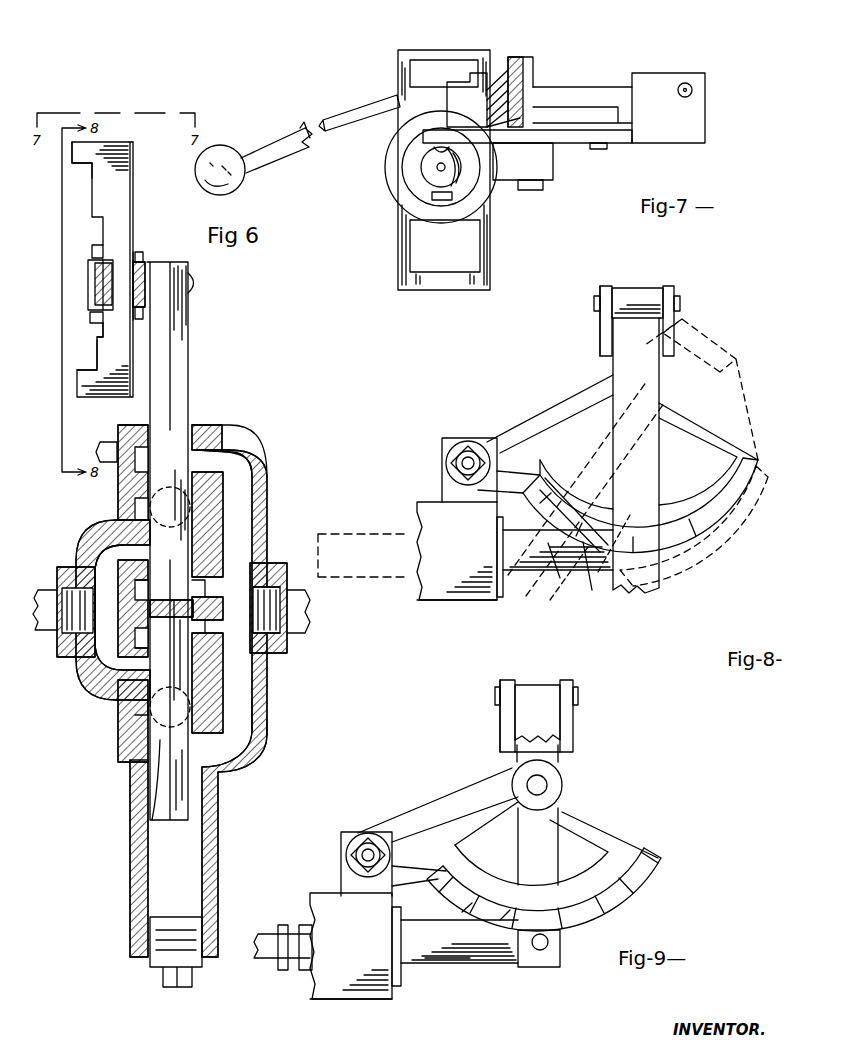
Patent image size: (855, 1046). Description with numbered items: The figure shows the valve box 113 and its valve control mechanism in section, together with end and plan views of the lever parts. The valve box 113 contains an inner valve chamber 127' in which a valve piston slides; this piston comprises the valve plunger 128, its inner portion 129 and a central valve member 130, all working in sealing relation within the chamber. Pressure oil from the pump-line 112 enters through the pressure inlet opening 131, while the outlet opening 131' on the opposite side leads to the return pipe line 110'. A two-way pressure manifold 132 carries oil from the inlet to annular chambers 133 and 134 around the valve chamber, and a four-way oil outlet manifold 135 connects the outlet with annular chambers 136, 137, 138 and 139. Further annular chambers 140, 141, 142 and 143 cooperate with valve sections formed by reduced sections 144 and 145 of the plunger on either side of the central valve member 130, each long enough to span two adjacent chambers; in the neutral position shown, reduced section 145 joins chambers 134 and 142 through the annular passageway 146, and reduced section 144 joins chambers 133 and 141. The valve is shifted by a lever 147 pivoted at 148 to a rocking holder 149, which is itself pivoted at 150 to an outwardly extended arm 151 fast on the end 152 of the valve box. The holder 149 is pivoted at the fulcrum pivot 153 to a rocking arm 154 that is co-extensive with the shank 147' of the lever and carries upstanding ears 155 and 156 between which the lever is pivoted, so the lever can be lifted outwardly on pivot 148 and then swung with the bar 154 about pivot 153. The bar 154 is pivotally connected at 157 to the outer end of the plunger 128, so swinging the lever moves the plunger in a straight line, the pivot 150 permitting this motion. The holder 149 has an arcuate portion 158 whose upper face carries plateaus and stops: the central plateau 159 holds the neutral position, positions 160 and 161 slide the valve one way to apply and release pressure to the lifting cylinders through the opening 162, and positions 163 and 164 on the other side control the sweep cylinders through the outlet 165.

In FIG. 6, the return pipe line 110' is at (311, 615).
In FIG. 6, the pump-line 112 is at (48, 640).
In FIG. 6, the valve box 113 is at (240, 675).
In FIG. 7, the valve box 113 is at (487, 190).
In FIG. 8, the valve box 113 is at (442, 600).
In FIG. 9, the valve box 113 is at (337, 984).
In FIG. 6, the inner valve chamber 127' is at (251, 524).
In FIG. 6, the valve plunger 128 is at (182, 373).
In FIG. 7, the valve plunger 128 is at (441, 167).
In FIG. 8, the valve plunger 128 is at (600, 570).
In FIG. 9, the valve plunger 128 is at (292, 958).
In FIG. 6, the inner portion of valve plunger 129 is at (160, 785).
In FIG. 6, the central valve member 130 is at (100, 655).
In FIG. 6, the pressure inlet opening 131 is at (60, 603).
In FIG. 7, the pressure inlet opening 131 is at (421, 175).
In FIG. 6, the outlet opening 131' is at (305, 608).
In FIG. 6, the two-way pressure manifold 132 is at (95, 650).
In FIG. 6, the annular chamber 133 is at (220, 515).
In FIG. 6, the annular chamber 134 is at (225, 660).
In FIG. 6, the four-way oil outlet manifold 135 is at (245, 725).
In FIG. 6, the annular chamber 136 is at (112, 530).
In FIG. 6, the annular chamber 137 is at (100, 450).
In FIG. 6, the annular chamber 138 is at (115, 670).
In FIG. 6, the annular chamber 139 is at (125, 760).
In FIG. 6, the annular chamber 140 is at (213, 482).
In FIG. 6, the annular chamber 141 is at (85, 555).
In FIG. 6, the annular chamber 142 is at (118, 640).
In FIG. 6, the annular chamber 143 is at (240, 705).
In FIG. 6, the reduced section of valve plunger 144 is at (187, 587).
In FIG. 6, the reduced section of valve plunger 145 is at (270, 620).
In FIG. 6, the annular passageway 146 is at (262, 635).
In FIG. 6, the lever 147 is at (170, 216).
In FIG. 7, the lever 147 is at (359, 88).
In FIG. 8, the shank of lever 147' is at (606, 455).
In FIG. 9, the shank of lever 147' is at (579, 723).
In FIG. 7, the pivot 148 is at (692, 92).
In FIG. 8, the pivot 148 is at (680, 302).
In FIG. 9, the pivot 148 is at (578, 700).
In FIG. 8, the rocking holder 149 is at (540, 418).
In FIG. 9, the rocking holder 149 is at (447, 805).
In FIG. 6, the pivot 150 is at (118, 428).
In FIG. 7, the pivot 150 is at (530, 190).
In FIG. 8, the pivot 150 is at (468, 450).
In FIG. 9, the pivot 150 is at (368, 843).
In FIG. 8, the outwardly extended arm 151 is at (445, 453).
In FIG. 9, the outwardly extended arm 151 is at (343, 845).
In FIG. 6, the end of valve box 152 is at (222, 425).
In FIG. 8, the end of valve box 152 is at (430, 512).
In FIG. 9, the end of valve box 152 is at (327, 905).
In FIG. 7, the fulcrum pivot 153 is at (600, 150).
In FIG. 9, the fulcrum pivot 153 is at (545, 785).
In FIG. 6, the rocking arm 154 is at (142, 300).
In FIG. 7, the rocking arm 154 is at (570, 135).
In FIG. 9, the rocking arm 154 is at (548, 835).
In FIG. 6, the upstanding ear 155 is at (92, 250).
In FIG. 7, the upstanding ear 155 is at (690, 118).
In FIG. 8, the upstanding ear 155 is at (674, 322).
In FIG. 9, the upstanding ear 155 is at (575, 695).
In FIG. 6, the upstanding ear 156 is at (90, 316).
In FIG. 8, the upstanding ear 156 is at (606, 343).
In FIG. 9, the upstanding ear 156 is at (505, 718).
In FIG. 6, the pivot connection 157 is at (200, 283).
In FIG. 7, the pivot connection 157 is at (430, 168).
In FIG. 9, the pivot connection 157 is at (540, 950).
In FIG. 6, the arcuate portion 158 is at (123, 338).
In FIG. 7, the arcuate portion 158 is at (525, 132).
In FIG. 9, the arcuate portion 158 is at (618, 890).
In FIG. 6, the central plateau 159 is at (136, 285).
In FIG. 6, the plateau and stop 160 is at (103, 225).
In FIG. 7, the plateau and stop 160 is at (455, 90).
In FIG. 8, the plateau and stop 160 is at (688, 525).
In FIG. 9, the plateau and stop 160 is at (580, 915).
In FIG. 6, the plateau and stop 161 is at (92, 178).
In FIG. 7, the plateau and stop 161 is at (510, 70).
In FIG. 8, the plateau and stop 161 is at (745, 500).
In FIG. 9, the plateau and stop 161 is at (590, 905).
In FIG. 6, the inlet and outlet opening 162 is at (172, 490).
In FIG. 6, the position 163 is at (97, 338).
In FIG. 8, the position 163 is at (593, 572).
In FIG. 9, the position 163 is at (500, 920).
In FIG. 6, the position 164 is at (92, 362).
In FIG. 8, the position 164 is at (560, 575).
In FIG. 9, the position 164 is at (462, 912).
In FIG. 6, the outlet 165 is at (135, 840).